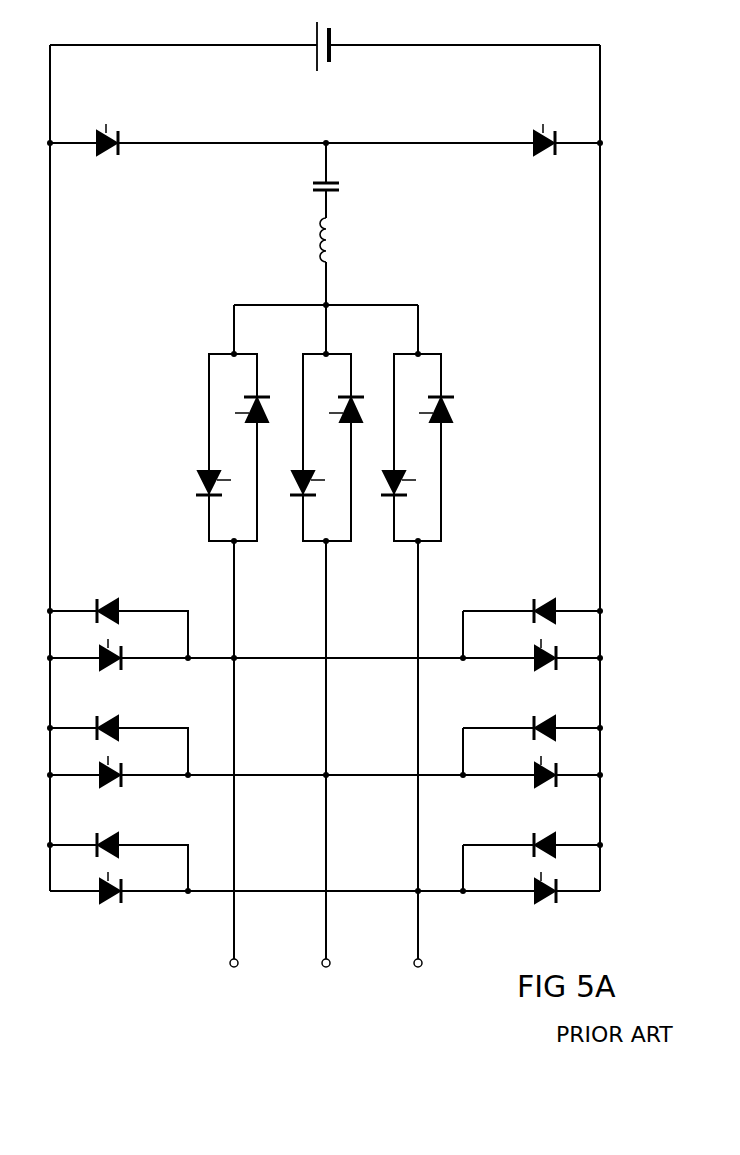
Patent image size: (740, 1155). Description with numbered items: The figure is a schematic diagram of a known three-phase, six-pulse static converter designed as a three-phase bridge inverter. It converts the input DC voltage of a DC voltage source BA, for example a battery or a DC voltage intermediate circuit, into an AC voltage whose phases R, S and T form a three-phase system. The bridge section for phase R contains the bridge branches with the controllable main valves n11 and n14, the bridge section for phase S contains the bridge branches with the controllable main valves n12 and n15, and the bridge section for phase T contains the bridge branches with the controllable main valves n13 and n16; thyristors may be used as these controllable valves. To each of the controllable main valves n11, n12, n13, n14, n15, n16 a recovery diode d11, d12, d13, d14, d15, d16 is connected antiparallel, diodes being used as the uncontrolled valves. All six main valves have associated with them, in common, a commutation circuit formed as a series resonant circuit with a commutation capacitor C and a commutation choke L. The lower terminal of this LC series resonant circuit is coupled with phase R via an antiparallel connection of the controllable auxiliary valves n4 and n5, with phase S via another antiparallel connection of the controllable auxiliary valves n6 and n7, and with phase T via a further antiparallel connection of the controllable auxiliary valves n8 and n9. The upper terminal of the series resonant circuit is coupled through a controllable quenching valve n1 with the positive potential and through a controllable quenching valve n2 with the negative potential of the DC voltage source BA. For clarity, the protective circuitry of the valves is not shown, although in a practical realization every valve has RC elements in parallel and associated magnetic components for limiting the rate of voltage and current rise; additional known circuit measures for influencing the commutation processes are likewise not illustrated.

The DC voltage source BA is at (327, 23).
The commutation capacitor C is at (341, 187).
The commutation choke L is at (333, 241).
The controllable quenching valve n1 is at (108, 150).
The controllable quenching valve n2 is at (542, 152).
The controllable auxiliary valve n4 is at (211, 494).
The controllable auxiliary valve n5 is at (256, 402).
The controllable auxiliary valve n6 is at (304, 494).
The controllable auxiliary valve n7 is at (350, 402).
The controllable auxiliary valve n8 is at (396, 494).
The controllable auxiliary valve n9 is at (441, 402).
The recovery diode d11 is at (117, 605).
The recovery diode d12 is at (117, 722).
The recovery diode d13 is at (117, 838).
The recovery diode d14 is at (532, 606).
The recovery diode d15 is at (535, 723).
The recovery diode d16 is at (537, 840).
The controllable main valve n11 is at (121, 651).
The controllable main valve n12 is at (121, 768).
The controllable main valve n13 is at (121, 884).
The controllable main valve n14 is at (535, 654).
The controllable main valve n15 is at (537, 771).
The controllable main valve n16 is at (539, 888).
The phase R is at (235, 979).
The phase S is at (326, 979).
The phase T is at (418, 979).